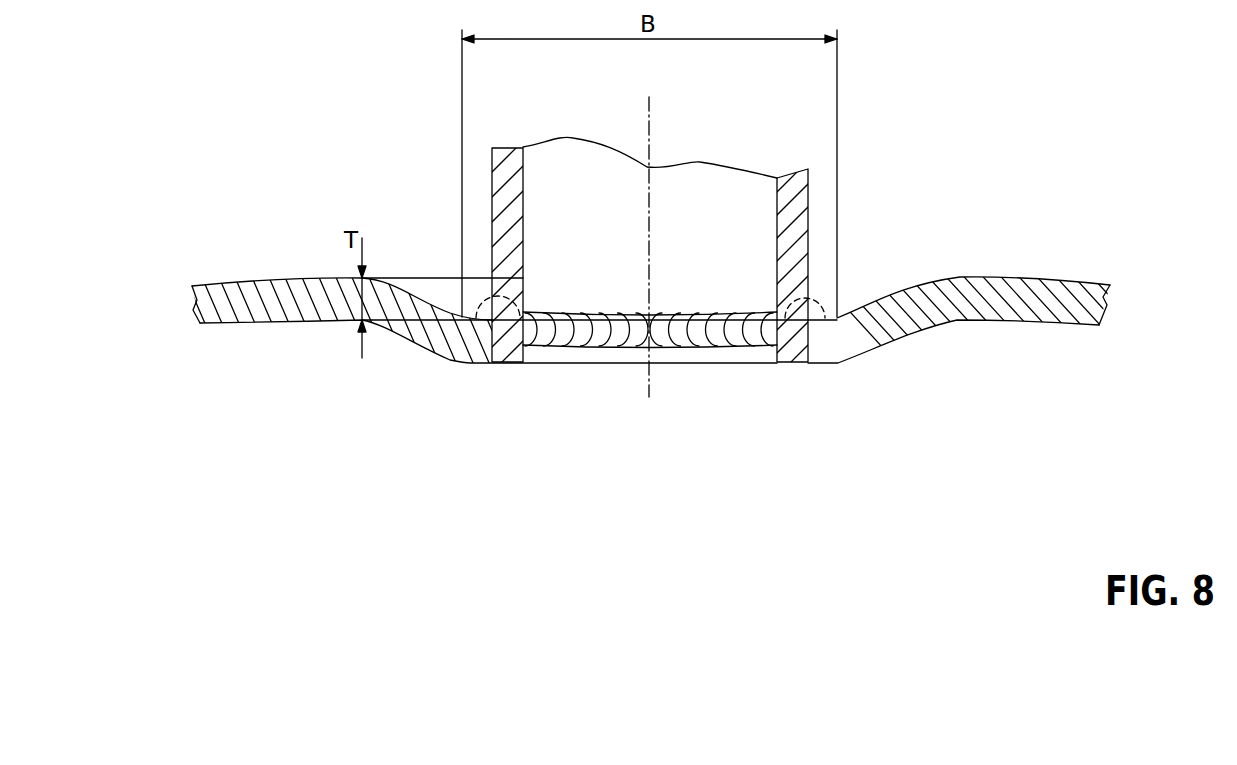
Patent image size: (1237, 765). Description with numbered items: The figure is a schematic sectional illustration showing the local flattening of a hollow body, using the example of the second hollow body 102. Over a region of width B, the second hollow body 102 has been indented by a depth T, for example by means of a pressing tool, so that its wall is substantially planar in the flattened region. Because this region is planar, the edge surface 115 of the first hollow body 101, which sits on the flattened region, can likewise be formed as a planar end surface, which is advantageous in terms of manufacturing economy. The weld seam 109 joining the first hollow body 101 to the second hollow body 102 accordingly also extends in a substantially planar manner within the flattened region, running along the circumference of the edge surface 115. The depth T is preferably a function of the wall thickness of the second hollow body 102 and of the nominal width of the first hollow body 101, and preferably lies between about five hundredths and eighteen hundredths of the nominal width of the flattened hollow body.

The first hollow body 101 is at (800, 200).
The second hollow body 102 is at (241, 313).
The weld seam 109 is at (838, 313).
The edge surface 115 is at (505, 315).